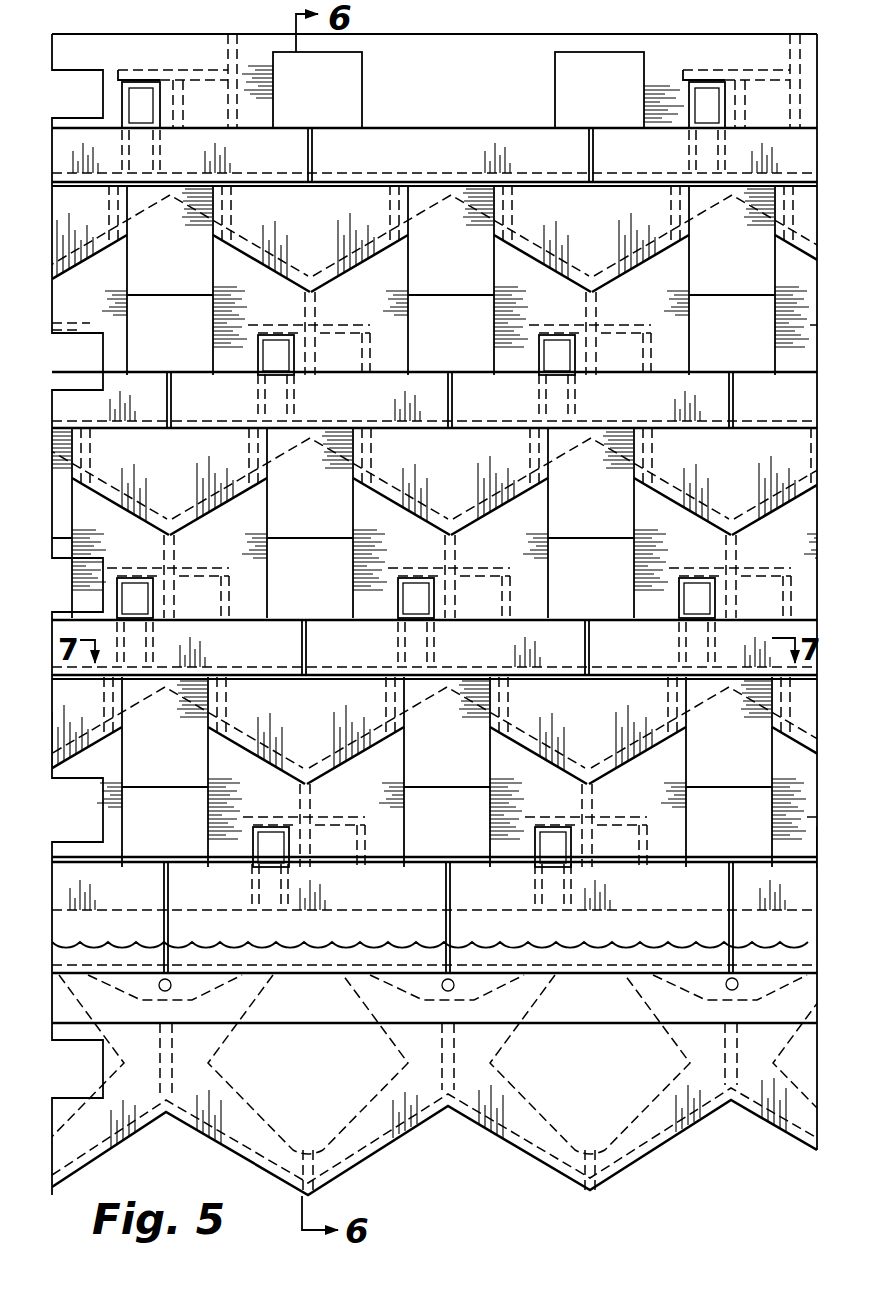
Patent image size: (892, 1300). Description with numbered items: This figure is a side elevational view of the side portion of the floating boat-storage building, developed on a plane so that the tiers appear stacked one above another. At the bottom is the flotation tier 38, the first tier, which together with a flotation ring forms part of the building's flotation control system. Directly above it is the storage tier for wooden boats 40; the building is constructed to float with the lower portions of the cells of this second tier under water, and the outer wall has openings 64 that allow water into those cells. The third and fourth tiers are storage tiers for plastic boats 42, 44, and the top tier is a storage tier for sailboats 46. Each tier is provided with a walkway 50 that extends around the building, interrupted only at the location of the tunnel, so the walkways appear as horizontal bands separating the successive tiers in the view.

The flotation tier 38 is at (150, 1058).
The storage tier for wooden boats 40 is at (153, 812).
The storage tier for plastic boats 42 is at (136, 563).
The storage tier for plastic boats 44 is at (125, 352).
The storage tier for sailboats 46 is at (122, 102).
The walkway 50 is at (277, 168).
The openings 64 is at (171, 989).